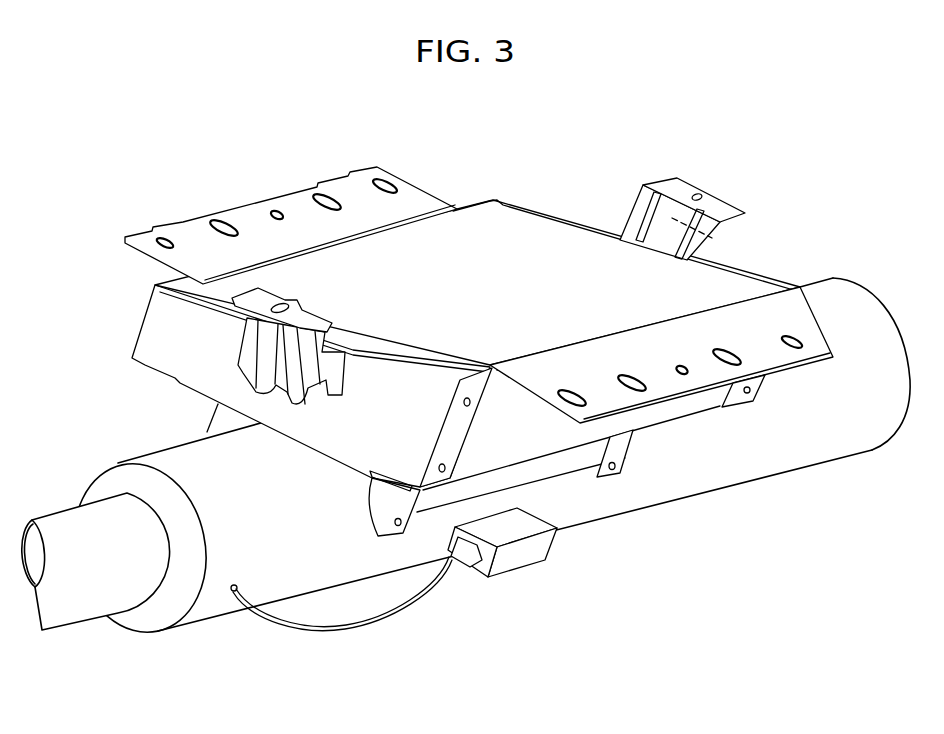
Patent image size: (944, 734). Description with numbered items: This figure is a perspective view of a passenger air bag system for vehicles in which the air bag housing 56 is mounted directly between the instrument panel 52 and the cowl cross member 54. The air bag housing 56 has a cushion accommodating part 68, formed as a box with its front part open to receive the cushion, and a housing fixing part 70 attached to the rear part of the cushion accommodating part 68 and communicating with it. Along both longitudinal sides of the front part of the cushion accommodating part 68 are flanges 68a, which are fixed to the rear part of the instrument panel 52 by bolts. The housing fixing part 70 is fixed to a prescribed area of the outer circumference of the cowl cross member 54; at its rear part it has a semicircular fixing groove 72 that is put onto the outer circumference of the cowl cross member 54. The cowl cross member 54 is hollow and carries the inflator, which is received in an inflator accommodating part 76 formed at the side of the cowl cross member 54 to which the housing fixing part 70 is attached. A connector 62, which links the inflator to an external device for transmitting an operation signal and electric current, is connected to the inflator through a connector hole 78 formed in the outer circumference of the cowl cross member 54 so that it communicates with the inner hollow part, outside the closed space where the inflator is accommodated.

The instrument panel 52 is at (525, 242).
The cowl cross member 54 is at (83, 634).
The air bag housing 56 is at (700, 552).
The connector 62 is at (523, 550).
The cushion accommodating part 68 is at (662, 413).
The flanges 68a is at (413, 203).
The housing fixing part 70 is at (560, 463).
The semicircular fixing groove 72 is at (382, 508).
The inflator accommodating part 76 is at (570, 510).
The connector hole 78 is at (233, 597).